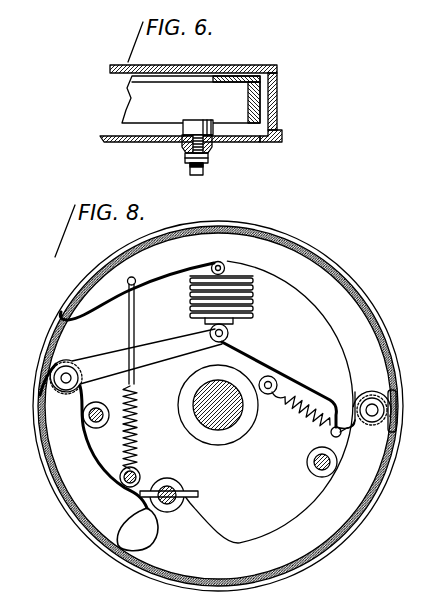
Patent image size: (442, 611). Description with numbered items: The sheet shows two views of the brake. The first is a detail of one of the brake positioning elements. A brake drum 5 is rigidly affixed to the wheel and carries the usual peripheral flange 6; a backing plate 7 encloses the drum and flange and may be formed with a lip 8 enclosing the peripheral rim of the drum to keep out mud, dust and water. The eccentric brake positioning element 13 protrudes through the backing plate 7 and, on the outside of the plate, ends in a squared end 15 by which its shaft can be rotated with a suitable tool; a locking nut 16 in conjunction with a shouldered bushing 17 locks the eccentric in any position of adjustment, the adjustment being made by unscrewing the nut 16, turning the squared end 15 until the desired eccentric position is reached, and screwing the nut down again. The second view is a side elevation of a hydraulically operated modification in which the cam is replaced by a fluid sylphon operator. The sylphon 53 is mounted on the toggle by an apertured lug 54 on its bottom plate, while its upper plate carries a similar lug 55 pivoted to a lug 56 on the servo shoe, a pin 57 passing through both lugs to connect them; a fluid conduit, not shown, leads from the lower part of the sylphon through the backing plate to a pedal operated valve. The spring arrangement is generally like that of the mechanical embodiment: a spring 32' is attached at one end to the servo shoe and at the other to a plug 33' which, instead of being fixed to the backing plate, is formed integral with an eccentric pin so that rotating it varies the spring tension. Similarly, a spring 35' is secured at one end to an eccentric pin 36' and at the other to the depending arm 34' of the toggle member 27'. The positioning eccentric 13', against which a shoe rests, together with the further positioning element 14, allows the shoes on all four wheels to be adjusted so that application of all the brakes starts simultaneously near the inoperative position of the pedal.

In FIG. 6, the brake drum 5 is at (235, 67).
In FIG. 6, the peripheral flange 6 is at (280, 102).
In FIG. 6, the backing plate 7 is at (100, 140).
In FIG. 6, the lip 8 is at (282, 140).
In FIG. 6, the eccentric brake positioning element 13 is at (179, 151).
In FIG. 6, the squared end 15 is at (203, 176).
In FIG. 6, the locking nut 16 is at (207, 166).
In FIG. 6, the shouldered bushing 17 is at (212, 151).
In FIG. 8, the eccentric brake positioning element 14 is at (102, 428).
In FIG. 8, the positioning eccentric 13' is at (309, 469).
In FIG. 8, the toggle member 27' is at (281, 389).
In FIG. 8, the spring 32' is at (147, 373).
In FIG. 8, the plug 33' is at (153, 470).
In FIG. 8, the depending arm 34' is at (379, 442).
In FIG. 8, the spring 35' is at (301, 423).
In FIG. 8, the eccentric pin 36' is at (288, 358).
In FIG. 8, the sylphon 53 is at (254, 300).
In FIG. 8, the apertured lug 54 is at (229, 331).
In FIG. 8, the lug 55 is at (227, 272).
In FIG. 8, the lug 56 is at (207, 266).
In FIG. 8, the pin 57 is at (221, 262).